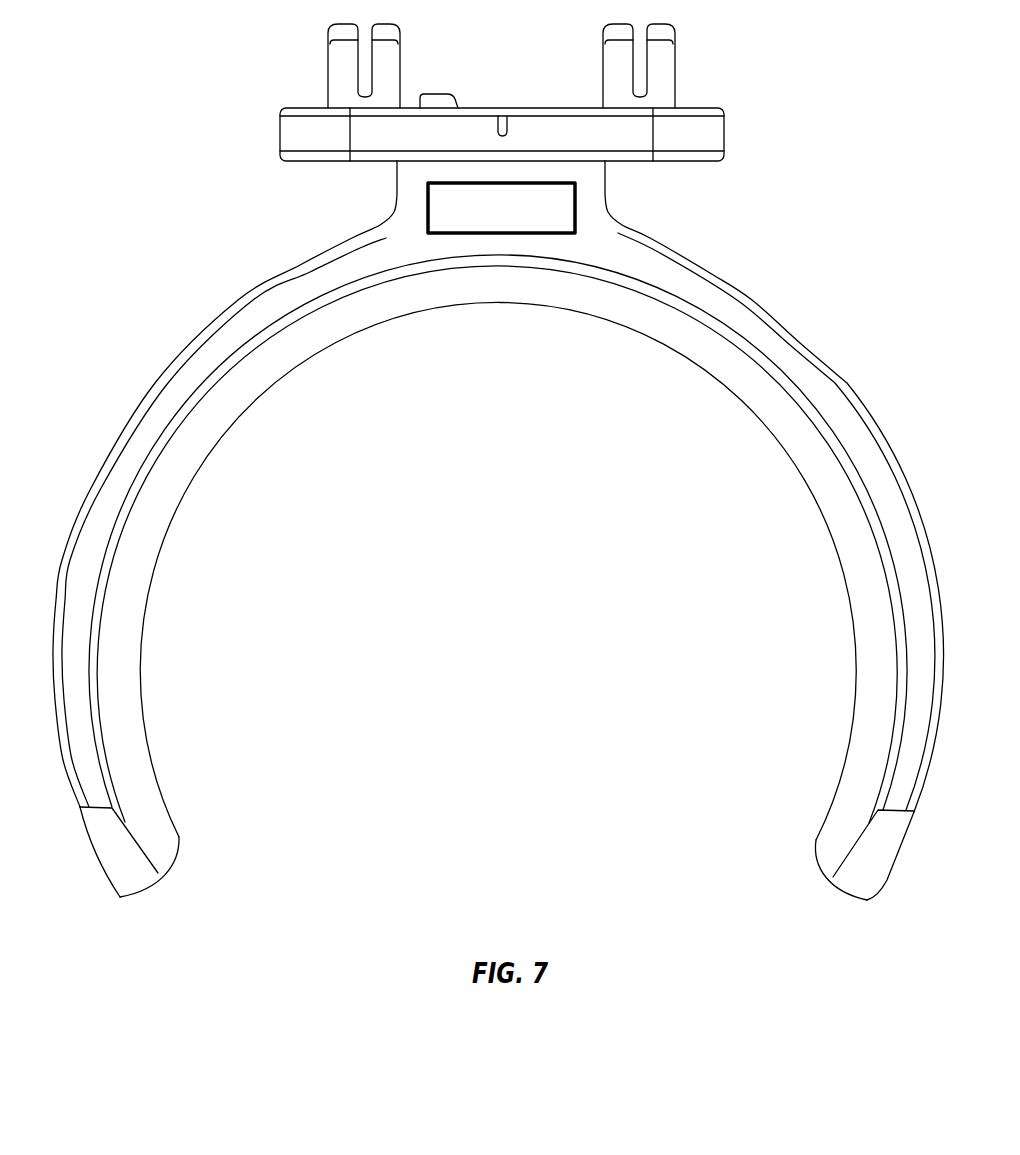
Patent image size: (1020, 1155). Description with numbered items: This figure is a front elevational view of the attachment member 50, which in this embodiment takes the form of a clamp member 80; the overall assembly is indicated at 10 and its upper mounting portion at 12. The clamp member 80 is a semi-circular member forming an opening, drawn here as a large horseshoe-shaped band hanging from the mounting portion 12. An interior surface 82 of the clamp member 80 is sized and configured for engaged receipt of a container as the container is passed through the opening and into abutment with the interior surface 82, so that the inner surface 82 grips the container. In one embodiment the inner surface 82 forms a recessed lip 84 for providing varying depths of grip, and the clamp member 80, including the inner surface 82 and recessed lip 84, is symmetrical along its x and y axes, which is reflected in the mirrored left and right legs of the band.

The attachment device 10 is at (104, 144).
The mounting base 12 is at (721, 114).
The attachment member 50 is at (832, 368).
The clamp member 80 is at (197, 338).
The interior surface 82 is at (115, 790).
The recessed lip 84 is at (137, 638).